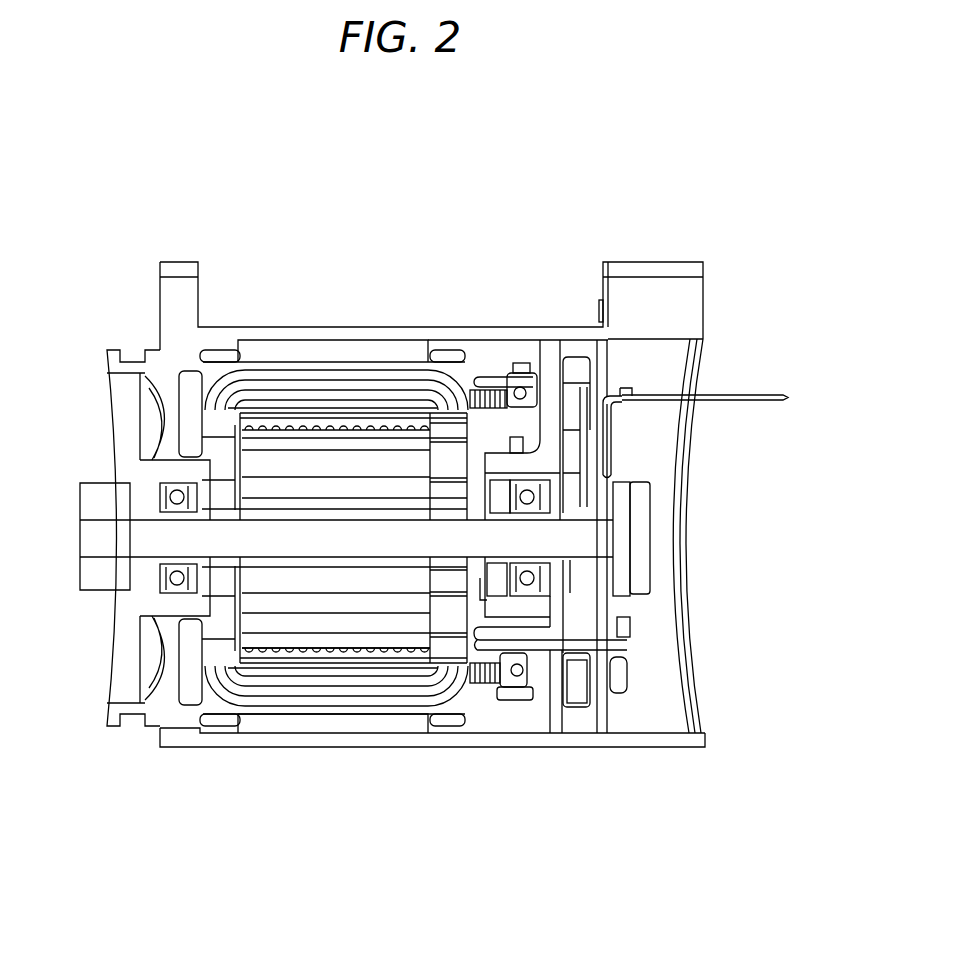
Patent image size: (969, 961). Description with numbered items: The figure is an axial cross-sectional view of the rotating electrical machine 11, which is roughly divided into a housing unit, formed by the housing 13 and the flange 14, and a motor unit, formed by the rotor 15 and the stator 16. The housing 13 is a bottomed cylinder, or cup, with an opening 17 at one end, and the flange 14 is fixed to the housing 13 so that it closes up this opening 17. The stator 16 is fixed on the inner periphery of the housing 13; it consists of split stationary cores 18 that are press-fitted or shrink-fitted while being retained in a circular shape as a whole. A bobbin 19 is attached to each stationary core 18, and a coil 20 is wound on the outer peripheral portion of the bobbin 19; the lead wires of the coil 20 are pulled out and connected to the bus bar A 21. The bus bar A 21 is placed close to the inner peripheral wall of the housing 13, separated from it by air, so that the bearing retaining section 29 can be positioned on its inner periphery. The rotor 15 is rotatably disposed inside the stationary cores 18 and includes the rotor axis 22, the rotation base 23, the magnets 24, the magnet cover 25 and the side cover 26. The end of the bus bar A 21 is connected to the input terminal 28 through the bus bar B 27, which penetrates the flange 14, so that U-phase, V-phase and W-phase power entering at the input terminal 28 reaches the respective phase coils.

The rotating electrical machine 11 is at (136, 334).
The housing 13 is at (445, 340).
The flange 14 is at (570, 727).
The rotor 15 is at (285, 455).
The stator 16 is at (371, 381).
The opening 17 is at (660, 735).
The stationary core 18 is at (317, 353).
The bobbin 19 is at (227, 362).
The coil 20 is at (360, 690).
The bus bar A 21 is at (495, 378).
The rotor axis 22 is at (117, 542).
The rotation base 23 is at (285, 607).
The magnets 24 is at (320, 640).
The magnet cover 25 is at (427, 664).
The side cover 26 is at (157, 609).
The bus bar B 27 is at (625, 383).
The input terminal 28 is at (733, 393).
The bearing retaining section 29 is at (530, 610).